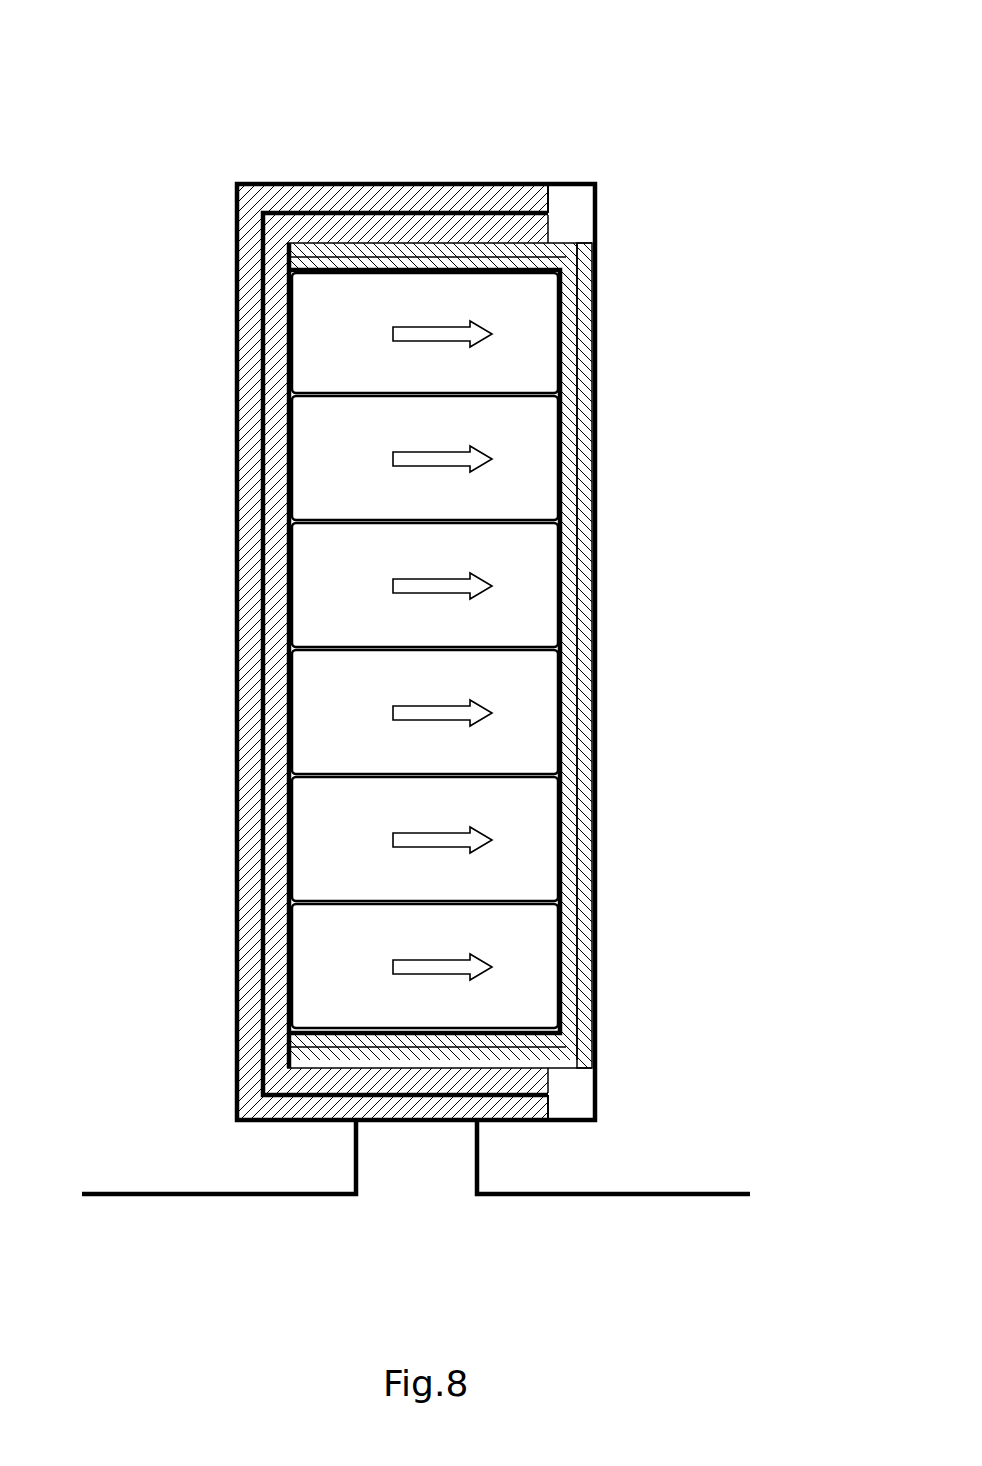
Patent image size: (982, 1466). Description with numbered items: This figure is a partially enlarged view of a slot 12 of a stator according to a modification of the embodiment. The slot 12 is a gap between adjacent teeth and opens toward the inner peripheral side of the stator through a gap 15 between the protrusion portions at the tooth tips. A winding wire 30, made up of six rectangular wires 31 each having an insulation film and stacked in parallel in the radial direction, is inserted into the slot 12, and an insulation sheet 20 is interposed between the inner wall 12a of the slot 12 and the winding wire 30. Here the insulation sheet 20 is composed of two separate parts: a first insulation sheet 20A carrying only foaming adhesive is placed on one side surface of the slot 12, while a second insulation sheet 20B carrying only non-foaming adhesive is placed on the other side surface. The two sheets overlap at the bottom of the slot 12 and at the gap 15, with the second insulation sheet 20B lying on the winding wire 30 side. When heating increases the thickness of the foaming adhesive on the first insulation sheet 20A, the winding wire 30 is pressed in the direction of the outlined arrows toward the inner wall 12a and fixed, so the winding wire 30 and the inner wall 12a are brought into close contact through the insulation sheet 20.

The slot 12 is at (414, 200).
The inner wall 12a is at (578, 215).
The gap 15 is at (412, 1155).
The insulation sheet 20 is at (594, 262).
The first insulation sheet 20A is at (265, 367).
The second insulation sheet 20B is at (590, 333).
The winding wire 30 is at (310, 250).
The rectangular wire 31 is at (535, 465).